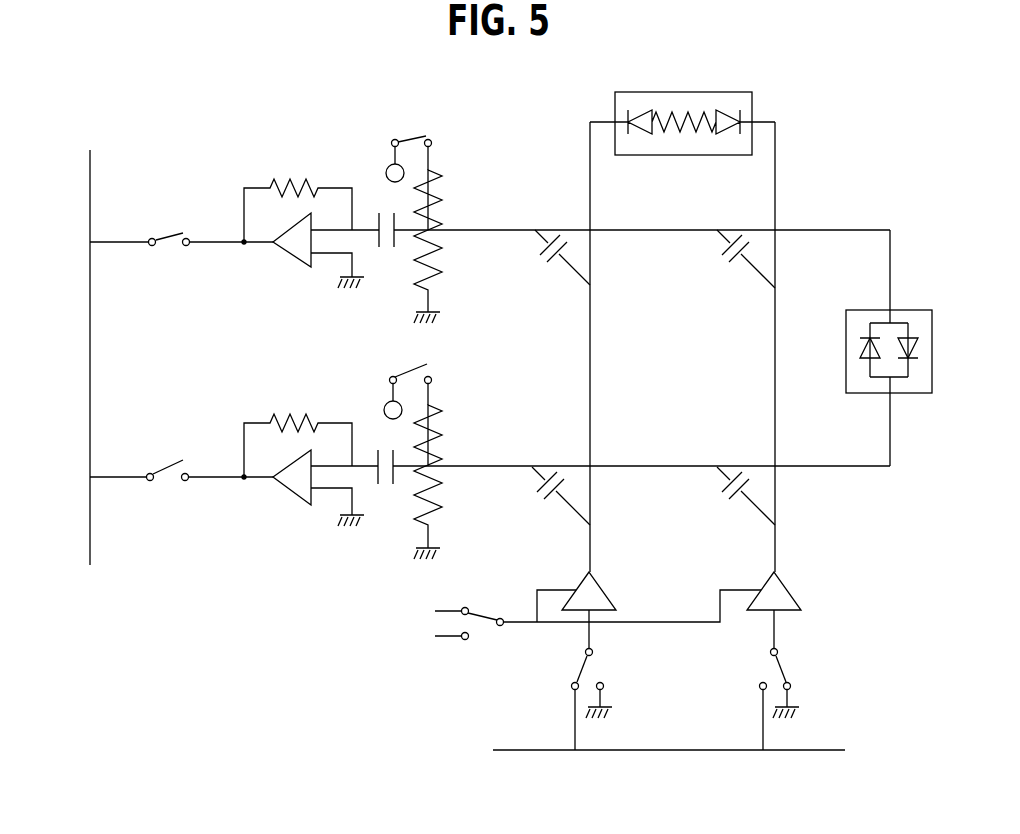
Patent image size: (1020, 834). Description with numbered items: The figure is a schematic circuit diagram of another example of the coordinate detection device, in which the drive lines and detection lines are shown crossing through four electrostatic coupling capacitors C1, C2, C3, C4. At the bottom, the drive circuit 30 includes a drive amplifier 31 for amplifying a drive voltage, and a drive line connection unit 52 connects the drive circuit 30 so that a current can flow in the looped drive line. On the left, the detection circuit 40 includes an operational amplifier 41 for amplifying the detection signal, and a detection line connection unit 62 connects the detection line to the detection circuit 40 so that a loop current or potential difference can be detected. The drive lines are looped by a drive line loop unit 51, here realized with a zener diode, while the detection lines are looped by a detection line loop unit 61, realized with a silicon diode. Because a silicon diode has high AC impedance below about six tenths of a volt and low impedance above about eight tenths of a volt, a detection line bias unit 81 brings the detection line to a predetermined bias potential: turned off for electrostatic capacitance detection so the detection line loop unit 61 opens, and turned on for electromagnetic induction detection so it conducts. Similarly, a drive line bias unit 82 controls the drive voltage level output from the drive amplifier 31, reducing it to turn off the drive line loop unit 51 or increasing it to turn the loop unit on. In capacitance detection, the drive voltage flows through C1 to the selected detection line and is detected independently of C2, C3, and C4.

The drive circuit 30 is at (511, 748).
The drive amplifier 31 is at (795, 585).
The detection circuit 40 is at (90, 532).
The operational amplifier 41 is at (318, 169).
The drive line loop unit 51 is at (752, 97).
The drive line connection unit 52 is at (778, 662).
The detection line loop unit 61 is at (920, 393).
The detection line connection unit 62 is at (169, 236).
The detection line bias unit 81 is at (452, 183).
The drive line bias unit 82 is at (447, 648).
The electrostatic coupling capacitor C1 is at (562, 265).
The electrostatic coupling capacitor C2 is at (746, 265).
The electrostatic coupling capacitor C3 is at (561, 504).
The electrostatic coupling capacitor C4 is at (746, 504).